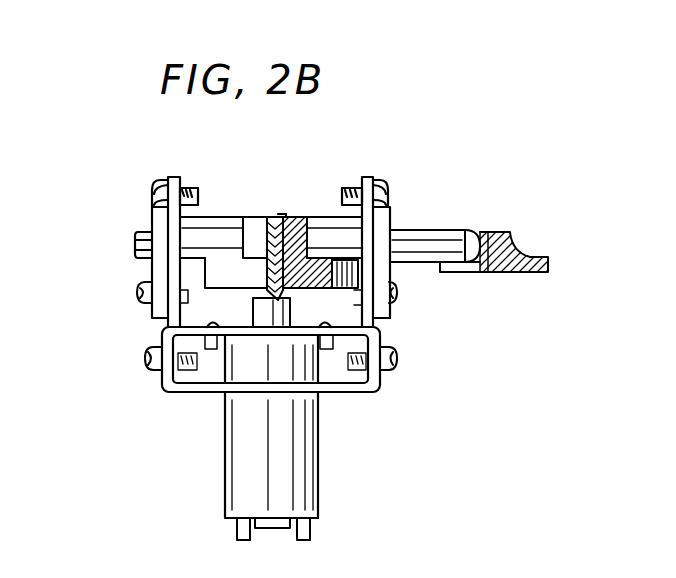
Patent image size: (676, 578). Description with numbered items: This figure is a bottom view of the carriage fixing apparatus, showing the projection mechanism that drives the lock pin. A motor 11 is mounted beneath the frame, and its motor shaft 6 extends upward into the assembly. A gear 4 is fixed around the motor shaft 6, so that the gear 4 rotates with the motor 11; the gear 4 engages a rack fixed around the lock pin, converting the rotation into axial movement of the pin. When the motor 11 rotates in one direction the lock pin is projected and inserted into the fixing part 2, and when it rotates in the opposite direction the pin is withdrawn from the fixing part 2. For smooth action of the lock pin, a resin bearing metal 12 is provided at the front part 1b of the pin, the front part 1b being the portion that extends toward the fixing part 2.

The front part of the lock pin 1b is at (392, 228).
The fixing part 2 is at (507, 232).
The gear 4 is at (258, 226).
The motor shaft 6 is at (262, 293).
The motor 11 is at (300, 468).
The resin bearing metal 12 is at (150, 312).